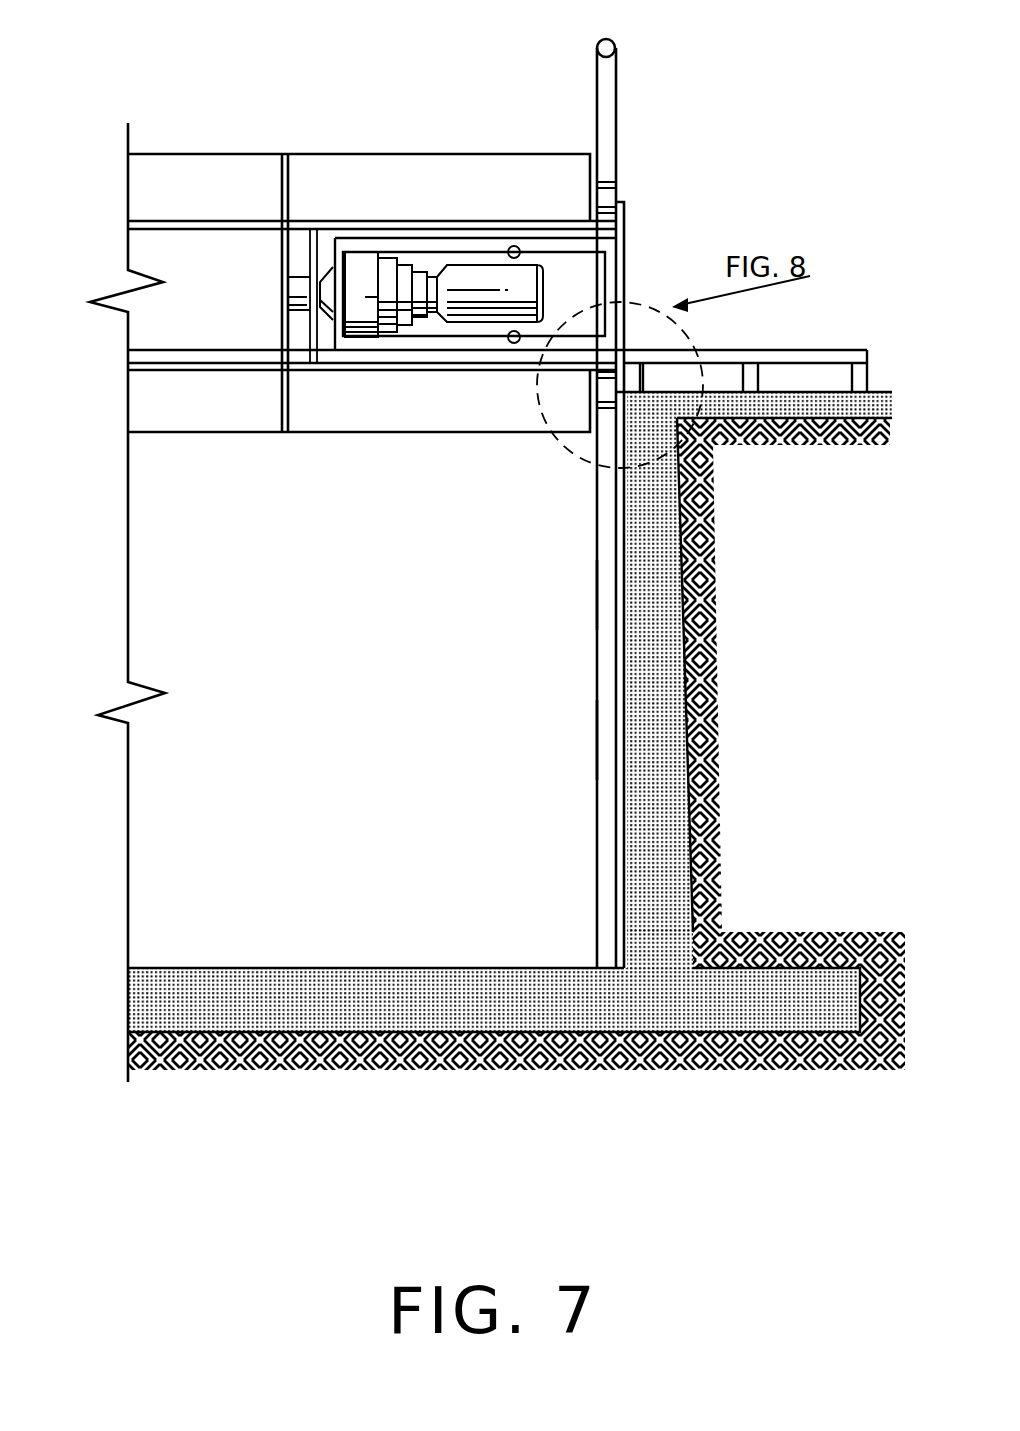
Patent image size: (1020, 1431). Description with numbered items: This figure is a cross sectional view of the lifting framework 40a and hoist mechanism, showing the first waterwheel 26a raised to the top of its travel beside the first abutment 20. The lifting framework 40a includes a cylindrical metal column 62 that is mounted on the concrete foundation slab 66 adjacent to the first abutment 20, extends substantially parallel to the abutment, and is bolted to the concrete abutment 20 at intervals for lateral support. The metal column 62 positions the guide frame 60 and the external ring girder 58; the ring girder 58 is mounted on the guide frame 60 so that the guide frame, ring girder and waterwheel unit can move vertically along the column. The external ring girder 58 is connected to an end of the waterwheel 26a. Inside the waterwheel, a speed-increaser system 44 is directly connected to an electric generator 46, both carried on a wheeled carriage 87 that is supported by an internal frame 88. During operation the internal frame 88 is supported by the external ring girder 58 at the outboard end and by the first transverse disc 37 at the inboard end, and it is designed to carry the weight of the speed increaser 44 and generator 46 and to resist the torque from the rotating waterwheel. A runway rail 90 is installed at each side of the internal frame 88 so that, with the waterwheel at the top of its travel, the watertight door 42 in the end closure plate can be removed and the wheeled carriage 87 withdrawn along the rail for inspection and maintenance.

The first abutment 20 is at (760, 1040).
The first waterwheel 26a is at (483, 153).
The intermediate disc 37 is at (290, 188).
The lifting framework 40a is at (597, 740).
The watertight door 42 is at (626, 264).
The speed-increaser system 44 is at (360, 270).
The electric generator 46 is at (493, 280).
The external ring girder 58 is at (680, 432).
The guide frame 60 is at (618, 190).
The cylindrical metal column 62 is at (597, 595).
The concrete foundation slab 66 is at (362, 1040).
The wheeled carriage 87 is at (330, 305).
The internal frame 88 is at (513, 347).
The runway rail 90 is at (435, 353).